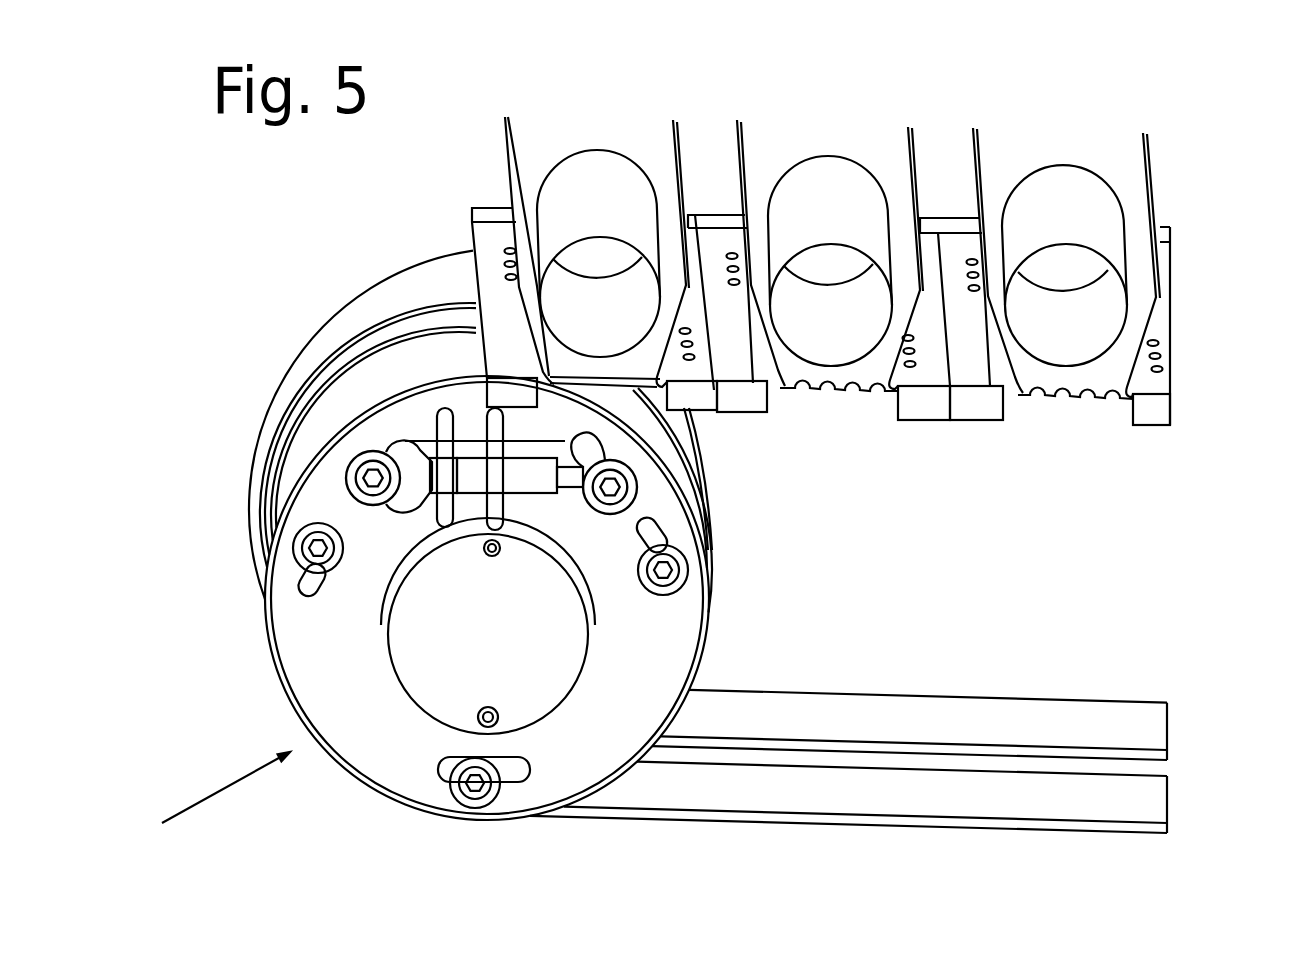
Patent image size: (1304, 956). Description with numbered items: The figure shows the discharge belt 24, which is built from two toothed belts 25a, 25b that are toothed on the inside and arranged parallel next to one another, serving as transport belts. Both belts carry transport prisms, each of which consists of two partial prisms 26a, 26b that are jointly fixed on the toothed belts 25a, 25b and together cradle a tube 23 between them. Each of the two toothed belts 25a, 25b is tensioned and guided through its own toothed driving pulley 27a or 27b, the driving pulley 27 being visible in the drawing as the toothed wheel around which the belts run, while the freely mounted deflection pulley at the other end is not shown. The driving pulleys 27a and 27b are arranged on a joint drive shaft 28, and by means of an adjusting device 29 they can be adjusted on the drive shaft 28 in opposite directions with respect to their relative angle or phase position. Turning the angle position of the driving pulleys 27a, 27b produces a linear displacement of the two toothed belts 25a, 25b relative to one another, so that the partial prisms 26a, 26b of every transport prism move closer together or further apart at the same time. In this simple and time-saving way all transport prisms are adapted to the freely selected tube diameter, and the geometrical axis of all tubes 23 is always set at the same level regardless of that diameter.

The tube 23 is at (838, 176).
The discharge belt 24 is at (226, 787).
The toothed belt 25a is at (1143, 801).
The toothed belt 25b is at (990, 710).
The partial prism 26a is at (898, 150).
The partial prism 26b is at (745, 152).
The toothed driving pulley 27 is at (672, 637).
The toothed driving pulley 27a is at (668, 450).
The toothed driving pulley 27b is at (702, 433).
The drive shaft 28 is at (412, 651).
The adjusting device 29 is at (342, 488).